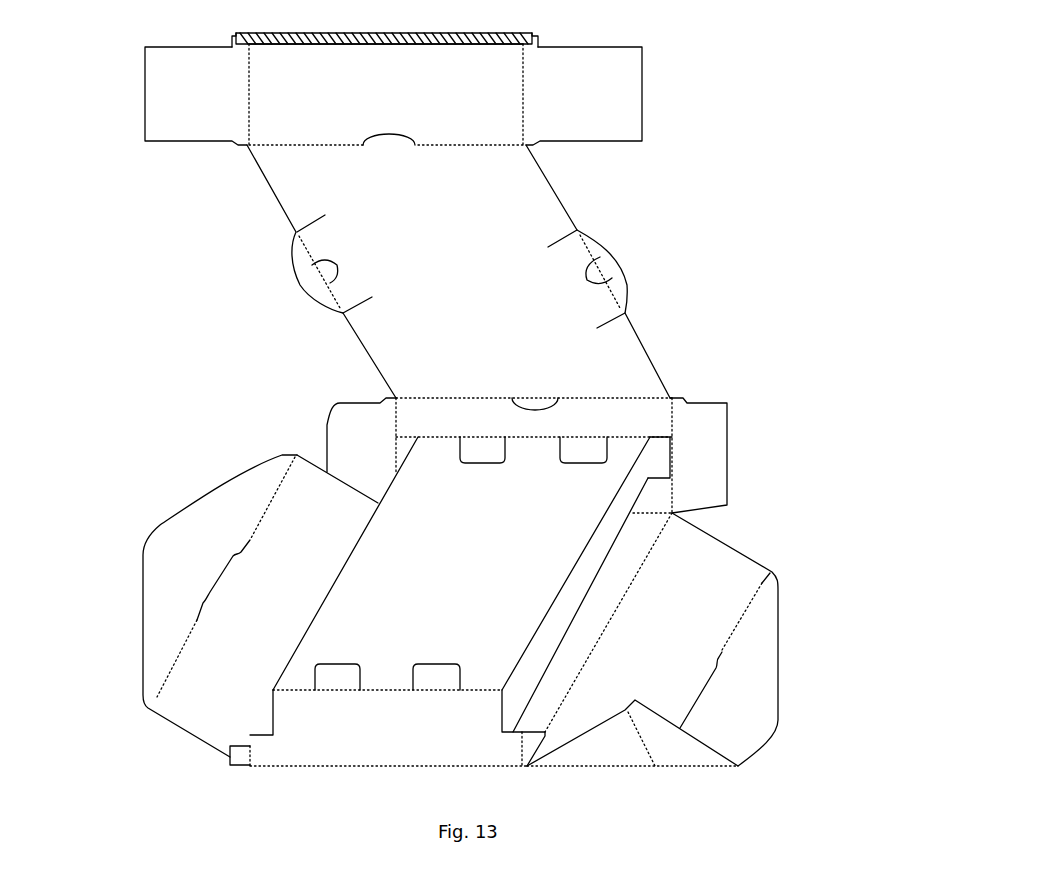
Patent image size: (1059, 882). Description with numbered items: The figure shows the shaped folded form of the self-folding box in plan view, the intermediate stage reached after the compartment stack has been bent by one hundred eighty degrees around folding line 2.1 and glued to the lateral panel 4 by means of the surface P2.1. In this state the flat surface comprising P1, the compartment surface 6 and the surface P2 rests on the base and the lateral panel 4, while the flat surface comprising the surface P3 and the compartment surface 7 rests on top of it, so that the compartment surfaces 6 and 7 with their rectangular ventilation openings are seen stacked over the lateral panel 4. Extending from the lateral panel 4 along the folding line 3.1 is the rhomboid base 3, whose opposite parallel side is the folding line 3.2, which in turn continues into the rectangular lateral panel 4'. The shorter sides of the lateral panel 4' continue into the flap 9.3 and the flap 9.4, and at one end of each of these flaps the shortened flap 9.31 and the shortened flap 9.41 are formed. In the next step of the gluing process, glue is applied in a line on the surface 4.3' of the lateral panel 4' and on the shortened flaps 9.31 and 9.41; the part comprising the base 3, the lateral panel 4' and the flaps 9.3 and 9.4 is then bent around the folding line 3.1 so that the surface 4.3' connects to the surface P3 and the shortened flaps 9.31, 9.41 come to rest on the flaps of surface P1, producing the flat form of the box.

The flap 9.4 is at (197, 88).
The shortened flap 9.41 is at (230, 43).
The surface 4.3' is at (345, 29).
The shortened flap 9.31 is at (536, 43).
The flap 9.3 is at (592, 71).
The lateral panel 4' is at (528, 76).
The folding line 3.2 is at (488, 146).
The base 3 is at (478, 353).
The folding line 3.1 is at (650, 398).
The lateral panel 4 is at (604, 455).
The compartment surface 7 is at (535, 543).
The compartment surface 6 is at (575, 590).